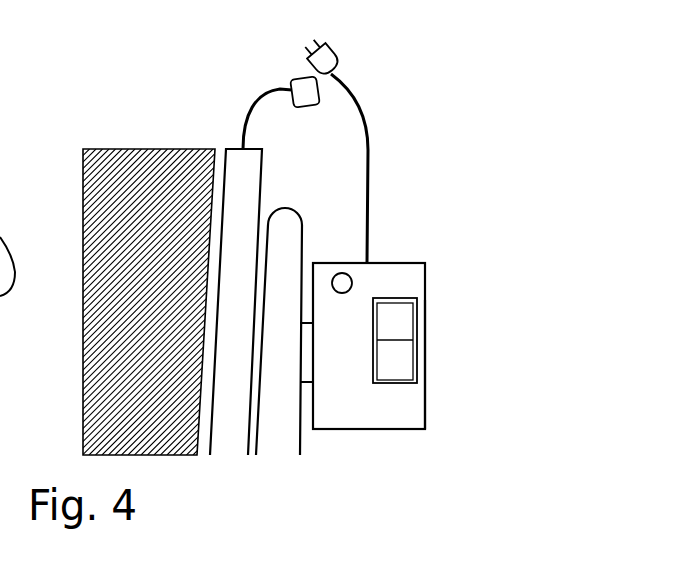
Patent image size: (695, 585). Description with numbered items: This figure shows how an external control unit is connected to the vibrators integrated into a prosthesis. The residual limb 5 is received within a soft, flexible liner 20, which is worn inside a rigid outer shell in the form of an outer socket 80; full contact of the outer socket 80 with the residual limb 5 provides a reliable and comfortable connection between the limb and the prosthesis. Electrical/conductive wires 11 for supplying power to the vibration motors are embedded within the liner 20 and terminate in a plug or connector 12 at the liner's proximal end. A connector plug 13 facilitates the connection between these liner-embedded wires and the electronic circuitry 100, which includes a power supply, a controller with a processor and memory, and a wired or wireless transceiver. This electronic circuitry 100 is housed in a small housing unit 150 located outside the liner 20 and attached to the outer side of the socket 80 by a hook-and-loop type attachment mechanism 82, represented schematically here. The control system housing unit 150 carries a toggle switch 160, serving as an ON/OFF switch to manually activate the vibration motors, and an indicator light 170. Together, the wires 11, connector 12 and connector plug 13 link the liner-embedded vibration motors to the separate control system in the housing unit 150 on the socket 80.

The residual limb 5 is at (140, 203).
The electrical/conductive wires 11 is at (237, 113).
The plug or connector 12 is at (297, 77).
The connector plug 13 is at (338, 62).
The liner 20 is at (227, 440).
The outer socket 80 is at (273, 440).
The hook-and-loop type attachment mechanism 82 is at (307, 373).
The electronic circuitry 100 is at (360, 410).
The housing unit 150 is at (427, 418).
The toggle switch 160 is at (397, 315).
The indicator light 170 is at (342, 273).